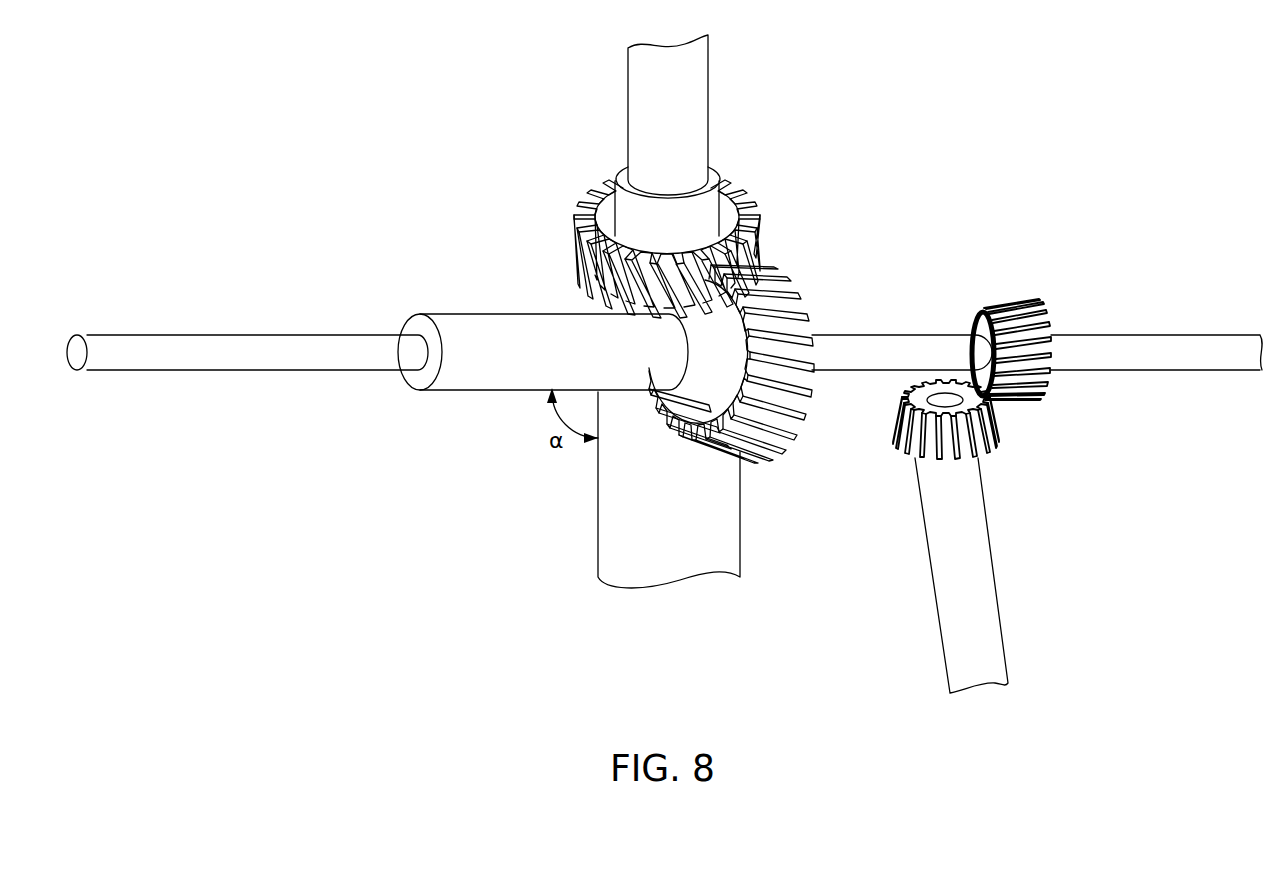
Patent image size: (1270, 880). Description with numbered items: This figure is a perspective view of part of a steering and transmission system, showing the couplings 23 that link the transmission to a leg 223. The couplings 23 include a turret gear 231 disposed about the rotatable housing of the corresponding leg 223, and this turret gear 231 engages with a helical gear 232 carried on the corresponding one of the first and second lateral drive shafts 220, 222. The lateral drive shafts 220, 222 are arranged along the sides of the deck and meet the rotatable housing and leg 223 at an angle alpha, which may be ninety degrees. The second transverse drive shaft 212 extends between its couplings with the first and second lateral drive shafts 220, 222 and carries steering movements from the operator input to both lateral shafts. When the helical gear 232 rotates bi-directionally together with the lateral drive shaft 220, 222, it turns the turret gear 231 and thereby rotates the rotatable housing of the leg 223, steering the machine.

The couplings 23 is at (571, 161).
The leg 223 is at (738, 83).
The turret gear 231 is at (760, 223).
The helical gear 232 is at (715, 450).
The first lateral drive shaft 220 is at (1037, 387).
The second lateral drive shaft 222 is at (1153, 370).
The second transverse drive shaft 212 is at (995, 608).